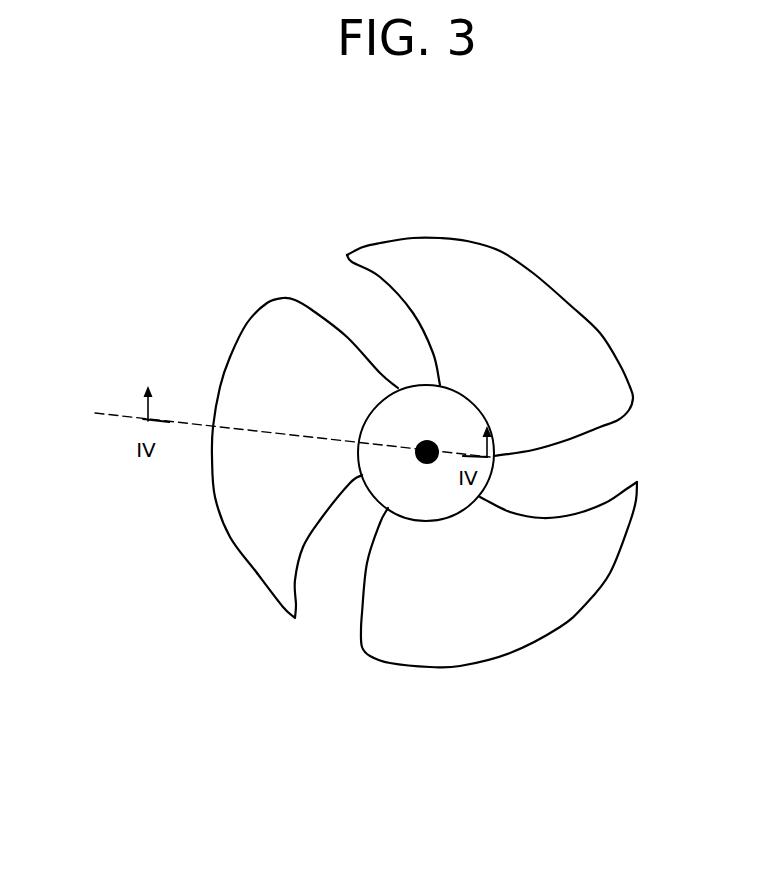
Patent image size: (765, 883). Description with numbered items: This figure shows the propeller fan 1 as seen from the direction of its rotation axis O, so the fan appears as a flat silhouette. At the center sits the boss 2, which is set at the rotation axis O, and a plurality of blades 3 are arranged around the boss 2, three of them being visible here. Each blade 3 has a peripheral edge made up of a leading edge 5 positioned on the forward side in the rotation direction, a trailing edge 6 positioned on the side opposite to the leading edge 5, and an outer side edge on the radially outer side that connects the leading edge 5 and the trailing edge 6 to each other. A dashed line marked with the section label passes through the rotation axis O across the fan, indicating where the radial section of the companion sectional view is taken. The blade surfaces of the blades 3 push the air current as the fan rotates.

The propeller fan 1 is at (208, 213).
The boss 2 is at (433, 505).
The blade 3 is at (411, 465).
The leading edge 5 is at (297, 588).
The trailing edge 6 is at (312, 308).
The rotation axis O is at (425, 440).